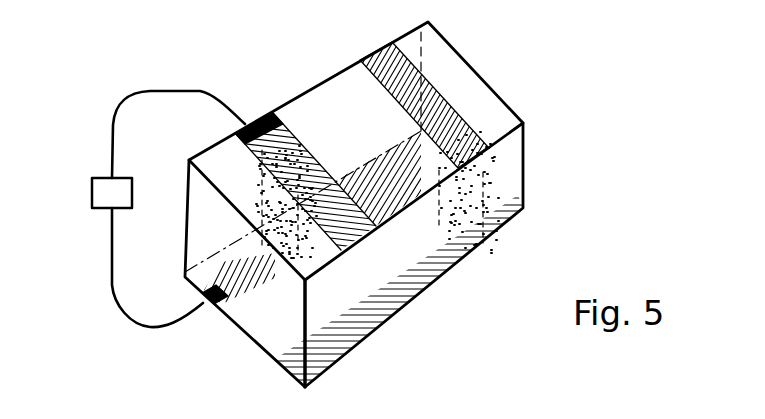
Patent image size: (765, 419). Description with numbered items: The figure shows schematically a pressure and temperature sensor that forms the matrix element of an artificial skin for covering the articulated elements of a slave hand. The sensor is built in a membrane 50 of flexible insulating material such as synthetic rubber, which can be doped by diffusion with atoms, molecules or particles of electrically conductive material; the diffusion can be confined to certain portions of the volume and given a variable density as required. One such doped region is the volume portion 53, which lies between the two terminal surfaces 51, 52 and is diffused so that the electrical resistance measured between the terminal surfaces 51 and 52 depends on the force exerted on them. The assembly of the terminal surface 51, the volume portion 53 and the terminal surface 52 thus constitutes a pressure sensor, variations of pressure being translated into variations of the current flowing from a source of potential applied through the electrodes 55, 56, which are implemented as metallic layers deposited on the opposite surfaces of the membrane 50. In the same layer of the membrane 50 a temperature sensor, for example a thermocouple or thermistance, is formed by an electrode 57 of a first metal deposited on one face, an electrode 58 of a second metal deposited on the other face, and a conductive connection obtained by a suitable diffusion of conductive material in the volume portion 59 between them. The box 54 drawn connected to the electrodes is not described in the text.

The membrane 50 is at (472, 94).
The terminal surface 51 is at (303, 155).
The terminal surface 52 is at (280, 255).
The volume portion 53 is at (270, 203).
The voltage source 54 is at (97, 187).
The electrode 55 is at (277, 133).
The electrode 56 is at (247, 275).
The electrode 57 is at (405, 62).
The electrode 58 is at (410, 283).
The volume portion 59 is at (462, 178).